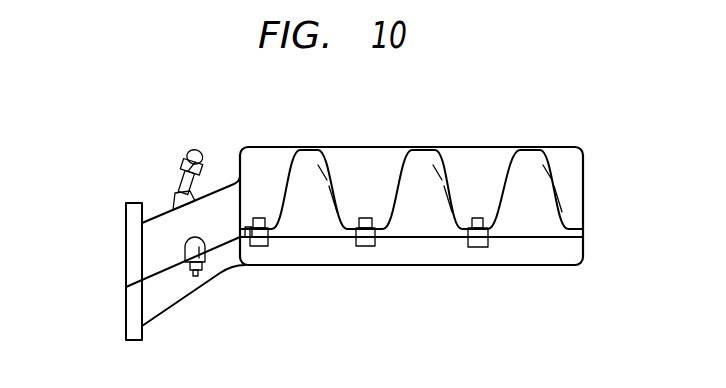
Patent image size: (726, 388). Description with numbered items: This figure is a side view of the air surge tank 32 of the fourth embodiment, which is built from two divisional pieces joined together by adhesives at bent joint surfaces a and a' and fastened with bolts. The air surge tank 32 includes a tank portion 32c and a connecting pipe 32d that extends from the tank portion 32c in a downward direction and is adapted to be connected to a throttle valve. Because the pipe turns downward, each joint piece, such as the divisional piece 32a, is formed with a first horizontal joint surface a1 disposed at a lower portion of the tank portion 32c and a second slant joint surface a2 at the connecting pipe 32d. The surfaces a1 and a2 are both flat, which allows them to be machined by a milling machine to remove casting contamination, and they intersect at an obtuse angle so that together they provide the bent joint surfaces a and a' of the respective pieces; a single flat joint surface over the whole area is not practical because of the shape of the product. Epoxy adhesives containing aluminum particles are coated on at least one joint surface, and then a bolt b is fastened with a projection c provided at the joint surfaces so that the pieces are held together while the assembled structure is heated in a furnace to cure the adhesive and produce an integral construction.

The air surge tank 32 is at (461, 147).
The divisional piece 32a is at (402, 147).
The tank portion 32c is at (345, 147).
The connecting pipe 32d is at (178, 304).
The joint surface a is at (431, 246).
The first horizontal joint surface a1 is at (324, 238).
The second slant joint surface a2 is at (152, 273).
The joint surface a' is at (556, 266).
The bolt b is at (477, 218).
The projection c is at (186, 251).